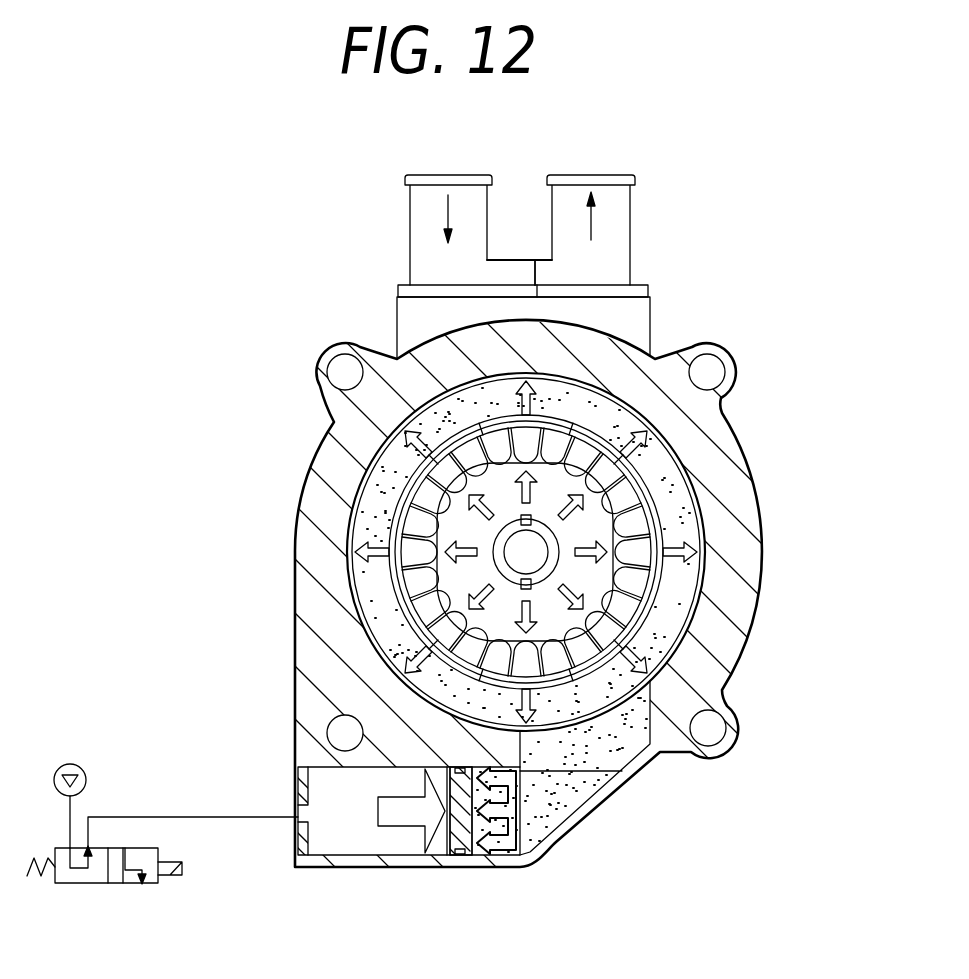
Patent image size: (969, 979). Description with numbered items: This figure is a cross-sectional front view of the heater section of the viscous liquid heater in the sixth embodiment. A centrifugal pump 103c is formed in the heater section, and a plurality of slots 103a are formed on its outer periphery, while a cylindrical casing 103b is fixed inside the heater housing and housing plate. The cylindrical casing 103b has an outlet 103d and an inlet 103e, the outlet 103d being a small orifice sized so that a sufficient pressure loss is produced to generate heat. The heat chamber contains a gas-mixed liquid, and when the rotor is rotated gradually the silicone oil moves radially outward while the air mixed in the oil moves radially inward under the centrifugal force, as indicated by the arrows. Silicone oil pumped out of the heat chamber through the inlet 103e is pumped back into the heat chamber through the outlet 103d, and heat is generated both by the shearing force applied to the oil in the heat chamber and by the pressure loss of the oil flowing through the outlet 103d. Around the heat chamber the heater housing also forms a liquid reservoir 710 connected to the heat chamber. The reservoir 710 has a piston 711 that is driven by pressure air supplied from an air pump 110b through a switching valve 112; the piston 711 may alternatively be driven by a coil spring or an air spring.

The slots 103a is at (625, 492).
The cylindrical casing 103b is at (672, 587).
The centrifugal pump 103c is at (666, 515).
The outlet 103d is at (488, 422).
The inlet 103e is at (573, 422).
The liquid reservoir 710 is at (520, 798).
The piston 711 is at (447, 855).
The air pump 110b is at (70, 764).
The switching valve 112 is at (88, 883).